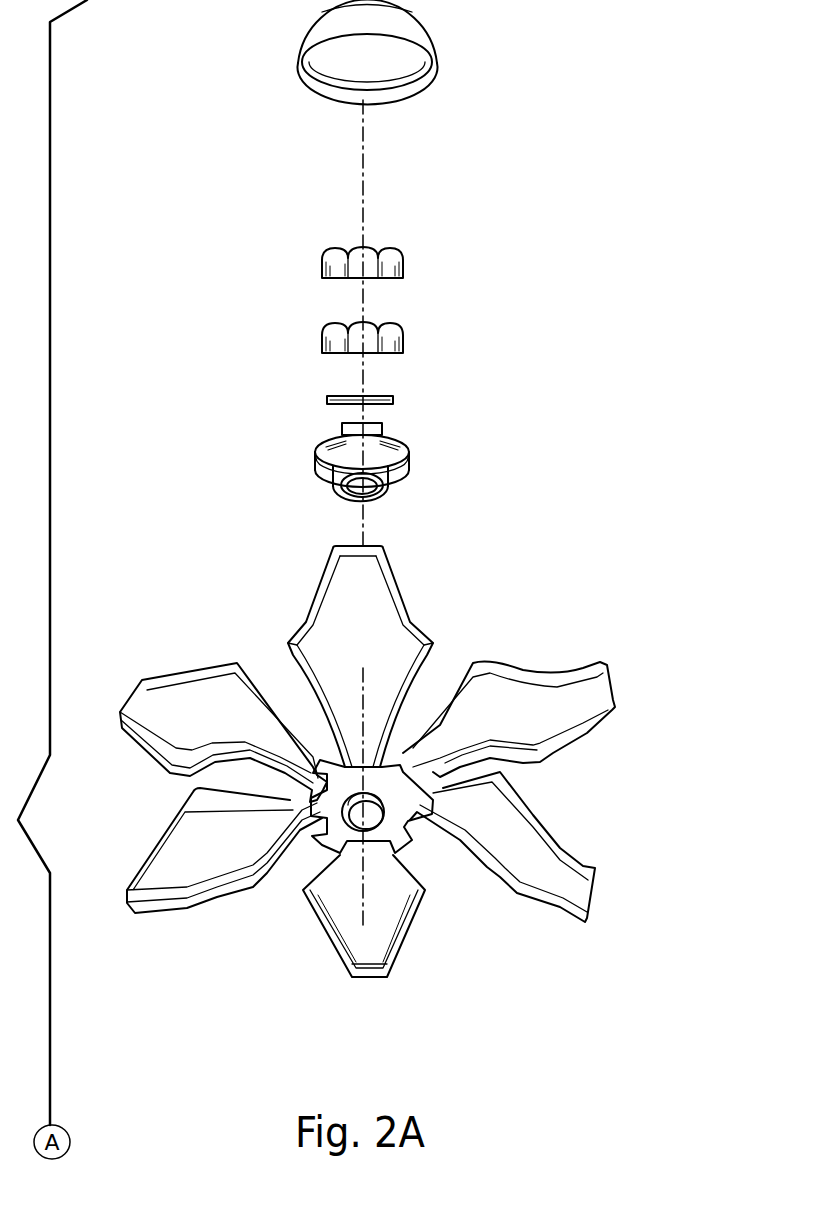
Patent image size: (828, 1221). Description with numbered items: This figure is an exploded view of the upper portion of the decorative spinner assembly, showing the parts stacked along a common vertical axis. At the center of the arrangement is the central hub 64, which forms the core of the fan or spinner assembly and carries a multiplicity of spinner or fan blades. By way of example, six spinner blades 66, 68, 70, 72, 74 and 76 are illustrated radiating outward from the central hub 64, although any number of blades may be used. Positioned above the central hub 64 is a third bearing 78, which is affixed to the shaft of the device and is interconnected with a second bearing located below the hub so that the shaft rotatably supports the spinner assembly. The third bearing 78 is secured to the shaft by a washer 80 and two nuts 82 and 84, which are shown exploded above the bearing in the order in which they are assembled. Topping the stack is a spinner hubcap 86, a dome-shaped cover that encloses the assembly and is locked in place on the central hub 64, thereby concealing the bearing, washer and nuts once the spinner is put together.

The central hub 64 is at (400, 745).
The spinner blade 66 is at (380, 577).
The spinner blade 68 is at (173, 700).
The spinner blade 70 is at (153, 880).
The spinner blade 72 is at (378, 952).
The spinner blade 74 is at (578, 893).
The spinner blade 76 is at (600, 690).
The third bearing 78 is at (400, 452).
The washer 80 is at (390, 400).
The nut 82 is at (395, 335).
The nut 84 is at (392, 258).
The spinner hubcap 86 is at (416, 22).